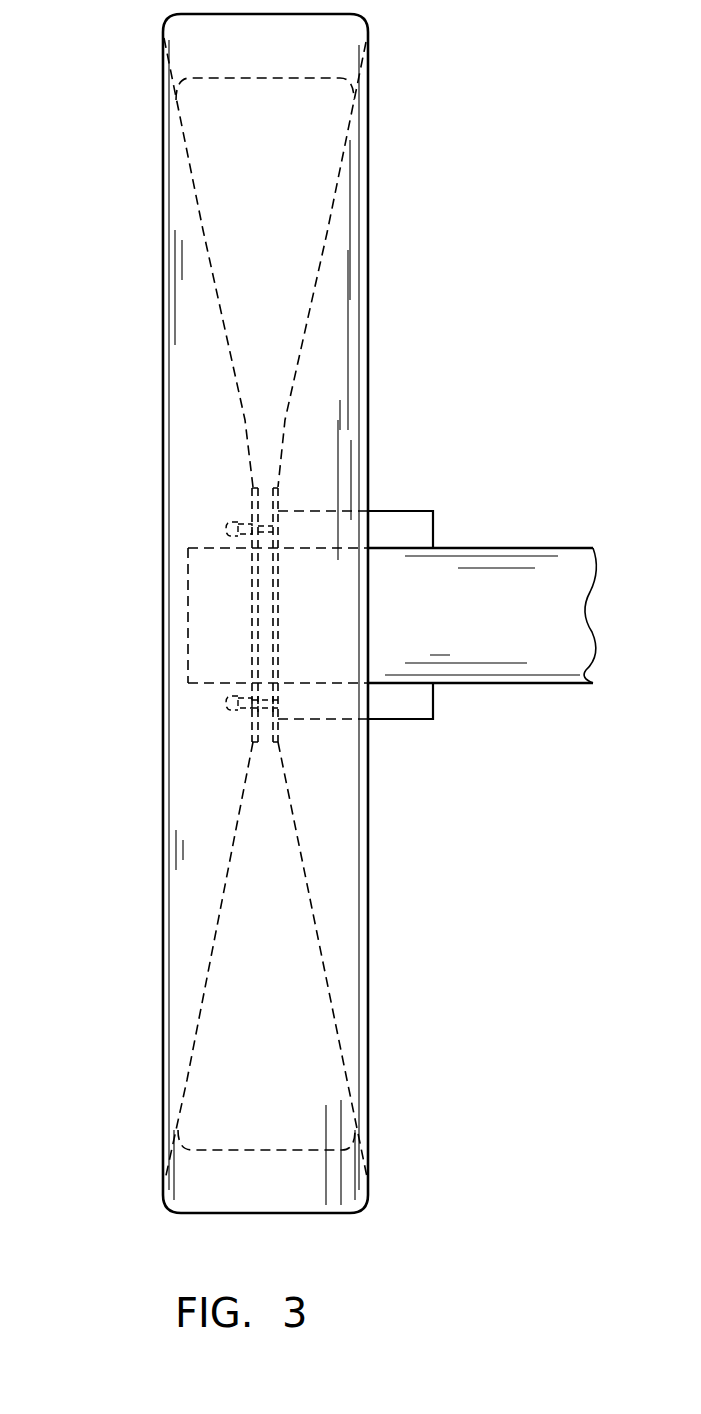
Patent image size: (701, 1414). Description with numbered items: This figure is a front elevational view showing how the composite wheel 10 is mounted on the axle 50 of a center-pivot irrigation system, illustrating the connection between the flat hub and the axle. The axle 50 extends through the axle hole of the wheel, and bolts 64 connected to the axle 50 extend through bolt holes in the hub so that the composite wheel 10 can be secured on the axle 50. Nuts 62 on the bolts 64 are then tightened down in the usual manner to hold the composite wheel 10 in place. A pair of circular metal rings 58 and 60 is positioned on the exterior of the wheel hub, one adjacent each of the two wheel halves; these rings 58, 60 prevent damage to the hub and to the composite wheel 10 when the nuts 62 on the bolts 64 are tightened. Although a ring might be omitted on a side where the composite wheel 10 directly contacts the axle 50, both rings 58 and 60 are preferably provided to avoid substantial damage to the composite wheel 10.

The composite wheel 10 is at (410, 290).
The axle 50 is at (503, 647).
The circular metal ring 58 is at (250, 498).
The circular metal ring 60 is at (283, 493).
The nut 62 is at (248, 722).
The bolt 64 is at (237, 712).